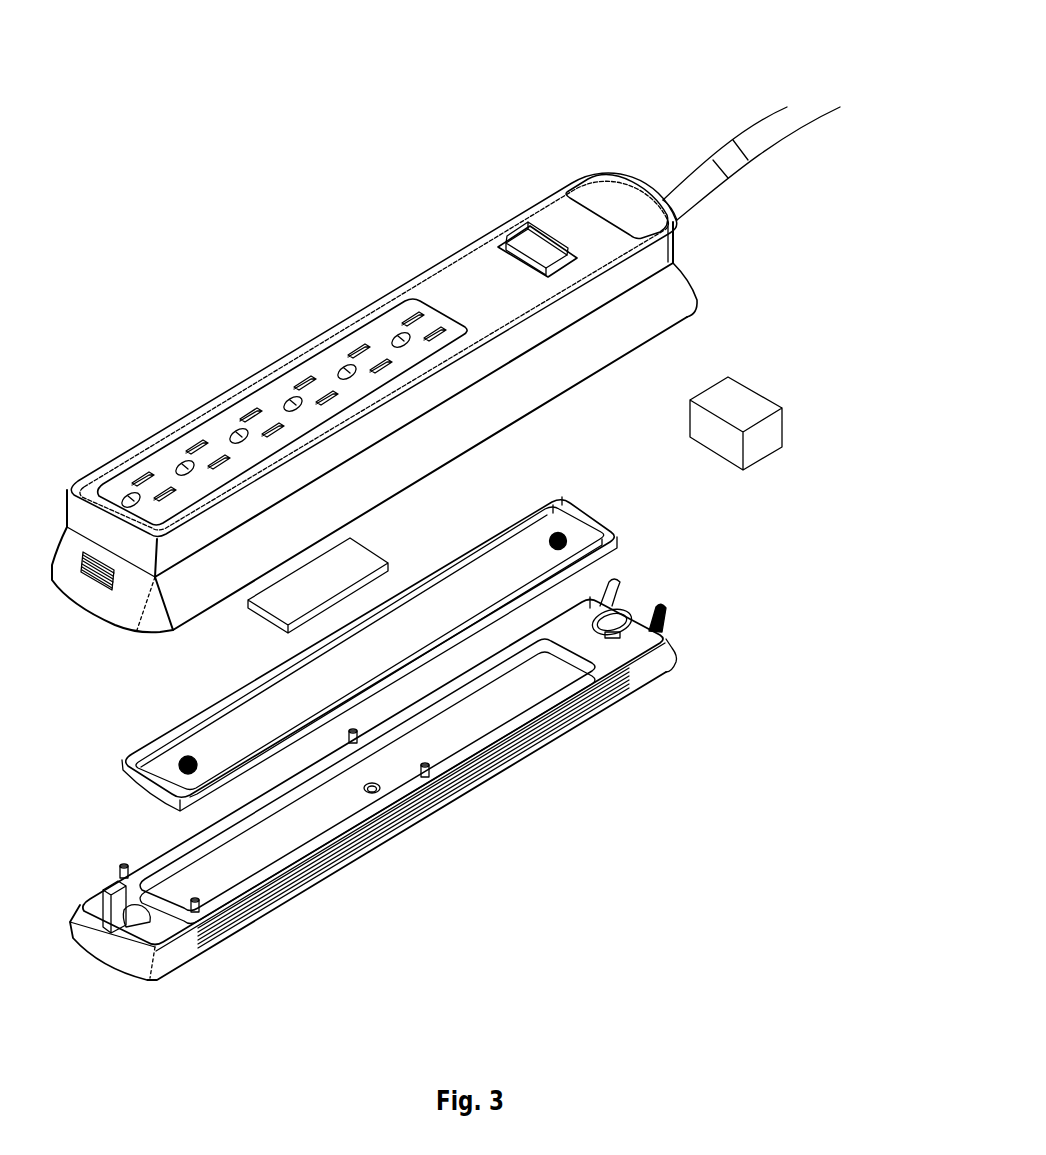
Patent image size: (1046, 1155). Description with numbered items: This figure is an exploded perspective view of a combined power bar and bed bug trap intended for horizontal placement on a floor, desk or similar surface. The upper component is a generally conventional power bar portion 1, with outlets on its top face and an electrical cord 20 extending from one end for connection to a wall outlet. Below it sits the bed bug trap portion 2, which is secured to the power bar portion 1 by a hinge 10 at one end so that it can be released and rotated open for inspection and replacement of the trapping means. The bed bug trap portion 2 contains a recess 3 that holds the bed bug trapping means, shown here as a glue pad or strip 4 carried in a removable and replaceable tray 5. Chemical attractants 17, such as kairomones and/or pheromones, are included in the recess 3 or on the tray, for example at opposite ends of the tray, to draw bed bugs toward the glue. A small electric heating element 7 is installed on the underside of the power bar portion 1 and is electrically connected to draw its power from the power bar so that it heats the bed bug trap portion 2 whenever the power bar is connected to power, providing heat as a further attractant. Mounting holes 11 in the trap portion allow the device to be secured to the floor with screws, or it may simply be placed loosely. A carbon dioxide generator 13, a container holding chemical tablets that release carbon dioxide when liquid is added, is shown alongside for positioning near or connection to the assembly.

The power bar portion 1 is at (470, 266).
The bed bug trap portion 2 is at (650, 682).
The recess 3 is at (525, 727).
The glue pad or strip 4 is at (522, 557).
The removable and replaceable tray 5 is at (618, 531).
The electric heating element 7 is at (357, 560).
The hinge 10 is at (665, 620).
The mounting holes 11 is at (375, 793).
The carbon dioxide generator 13 is at (743, 400).
The chemical attractants 17 is at (184, 764).
The electrical cord 20 is at (763, 128).